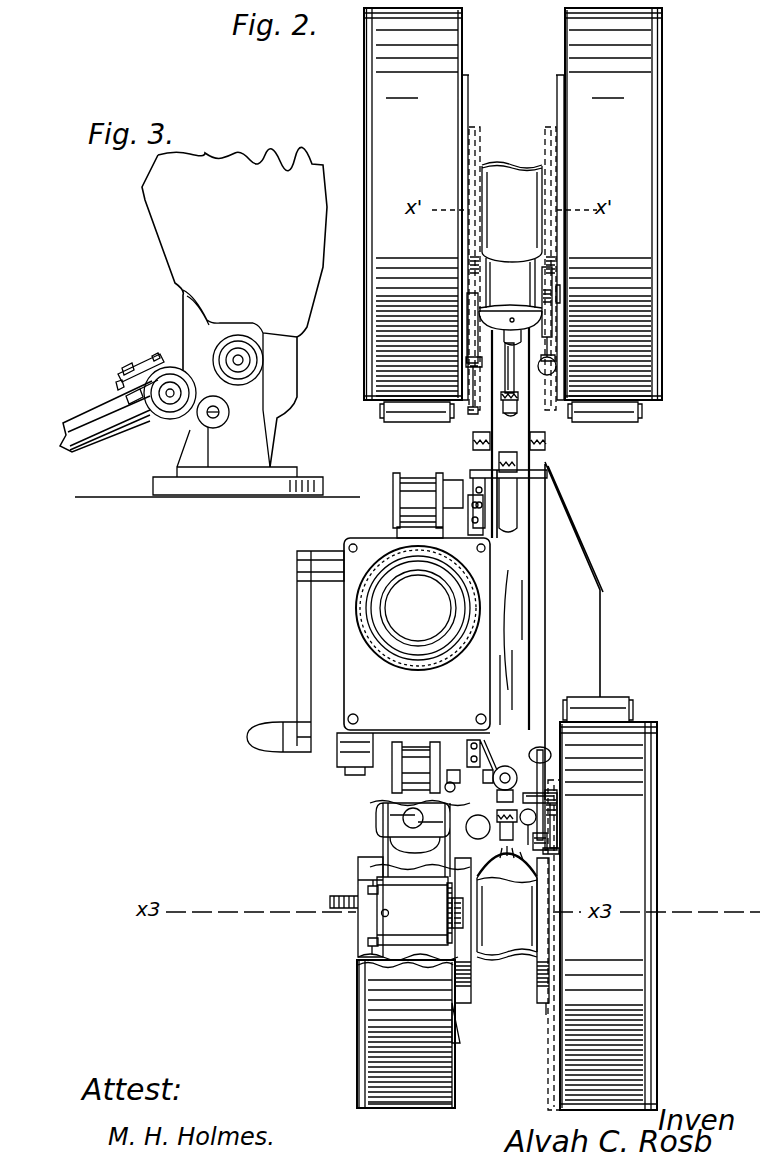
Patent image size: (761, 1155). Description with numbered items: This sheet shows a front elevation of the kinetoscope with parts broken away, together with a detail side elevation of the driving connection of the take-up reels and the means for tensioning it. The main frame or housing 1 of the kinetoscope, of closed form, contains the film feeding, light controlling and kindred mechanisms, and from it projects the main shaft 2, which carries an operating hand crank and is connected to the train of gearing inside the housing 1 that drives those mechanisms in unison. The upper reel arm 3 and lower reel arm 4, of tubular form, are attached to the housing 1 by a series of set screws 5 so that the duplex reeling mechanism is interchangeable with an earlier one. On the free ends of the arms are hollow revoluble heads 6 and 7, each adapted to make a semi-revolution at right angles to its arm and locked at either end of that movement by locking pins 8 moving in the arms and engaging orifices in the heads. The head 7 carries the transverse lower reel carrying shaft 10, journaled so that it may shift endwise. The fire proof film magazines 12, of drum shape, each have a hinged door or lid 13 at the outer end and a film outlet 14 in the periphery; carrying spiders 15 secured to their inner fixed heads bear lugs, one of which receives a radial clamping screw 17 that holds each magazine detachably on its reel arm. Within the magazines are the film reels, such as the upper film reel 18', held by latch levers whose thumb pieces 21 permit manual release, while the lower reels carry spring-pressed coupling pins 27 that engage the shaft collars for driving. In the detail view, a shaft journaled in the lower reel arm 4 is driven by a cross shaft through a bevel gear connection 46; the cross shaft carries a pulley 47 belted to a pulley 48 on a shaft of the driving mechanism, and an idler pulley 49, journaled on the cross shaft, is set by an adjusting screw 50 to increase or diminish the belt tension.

In FIG. 2, the main frame or housing 1 is at (345, 648).
In FIG. 3, the main frame or housing 1 is at (217, 322).
In FIG. 2, the main shaft 2 is at (297, 567).
In FIG. 2, the upper reel arm 3 is at (520, 430).
In FIG. 2, the lower reel arm 4 is at (418, 798).
In FIG. 3, the lower reel arm 4 is at (88, 404).
In FIG. 2, the set screws 5 is at (547, 444).
In FIG. 2, the hollow revoluble head 6 is at (510, 253).
In FIG. 2, the hollow revoluble head 7 is at (501, 884).
In FIG. 2, the locking pins 8 is at (512, 376).
In FIG. 2, the lower reel carrying shaft 10 is at (465, 905).
In FIG. 2, the film magazines 12 is at (412, 1122).
In FIG. 2, the hinged door or lid 13 is at (363, 78).
In FIG. 2, the film outlet 14 is at (412, 422).
In FIG. 2, the carrying spiders 15 is at (469, 170).
In FIG. 2, the radial clamping screw 17 is at (468, 312).
In FIG. 2, the upper film reel 18' is at (414, 911).
In FIG. 2, the thumb pieces 21 is at (368, 942).
In FIG. 2, the coupling pins 27 is at (368, 888).
In FIG. 3, the bevel gear connection 46 is at (172, 400).
In FIG. 3, the pulley 47 is at (128, 440).
In FIG. 3, the pulley 48 is at (264, 362).
In FIG. 3, the idler pulley 49 is at (230, 412).
In FIG. 2, the adjusting screw 50 is at (560, 808).
In FIG. 3, the adjusting screw 50 is at (135, 372).